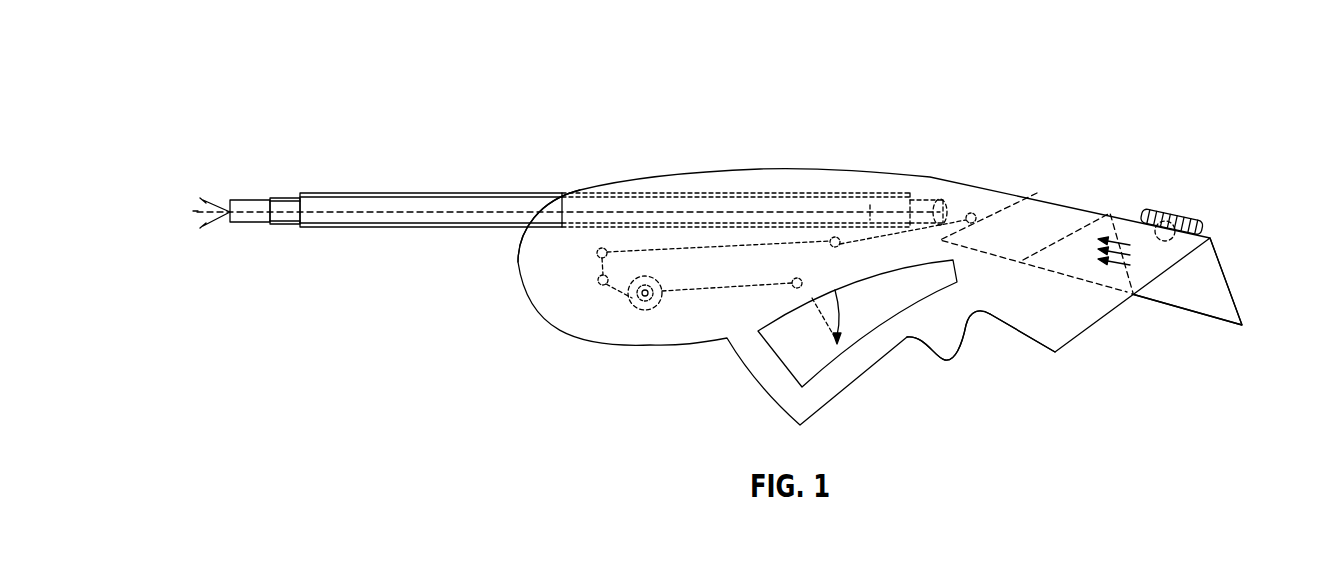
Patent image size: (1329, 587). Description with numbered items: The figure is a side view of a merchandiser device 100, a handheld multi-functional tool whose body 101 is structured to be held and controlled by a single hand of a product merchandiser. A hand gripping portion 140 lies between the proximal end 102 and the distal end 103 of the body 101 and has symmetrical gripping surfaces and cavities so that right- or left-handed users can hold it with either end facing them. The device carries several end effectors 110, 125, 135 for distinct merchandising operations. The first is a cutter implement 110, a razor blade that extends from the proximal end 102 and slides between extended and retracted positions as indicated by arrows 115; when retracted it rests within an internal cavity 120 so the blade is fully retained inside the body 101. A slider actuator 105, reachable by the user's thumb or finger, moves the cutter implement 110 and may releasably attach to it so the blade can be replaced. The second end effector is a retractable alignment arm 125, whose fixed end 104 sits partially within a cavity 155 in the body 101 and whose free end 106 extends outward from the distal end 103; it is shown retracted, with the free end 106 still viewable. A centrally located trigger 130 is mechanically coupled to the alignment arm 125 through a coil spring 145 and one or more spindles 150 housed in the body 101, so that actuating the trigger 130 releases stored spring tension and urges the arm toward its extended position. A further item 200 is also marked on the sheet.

The merchandiser device 100 is at (152, 76).
The body 101 is at (517, 263).
The proximal end 102 is at (1053, 356).
The distal end 103 is at (567, 334).
The fixed end 104 is at (926, 208).
The slider actuator 105 is at (1167, 213).
The free end 106 is at (257, 198).
The cutter implement 110 is at (1232, 280).
The arrows 115 is at (1113, 262).
The internal cavity 120 is at (1047, 217).
The retractable alignment arm 125 is at (318, 193).
The trigger 130 is at (840, 333).
The end effector 135 is at (203, 200).
The hand gripping portion 140 is at (912, 318).
The coil spring 145 is at (645, 305).
The spindles 150 is at (602, 248).
The cavity 155 is at (910, 221).
The second instrument 200 is at (152, 540).